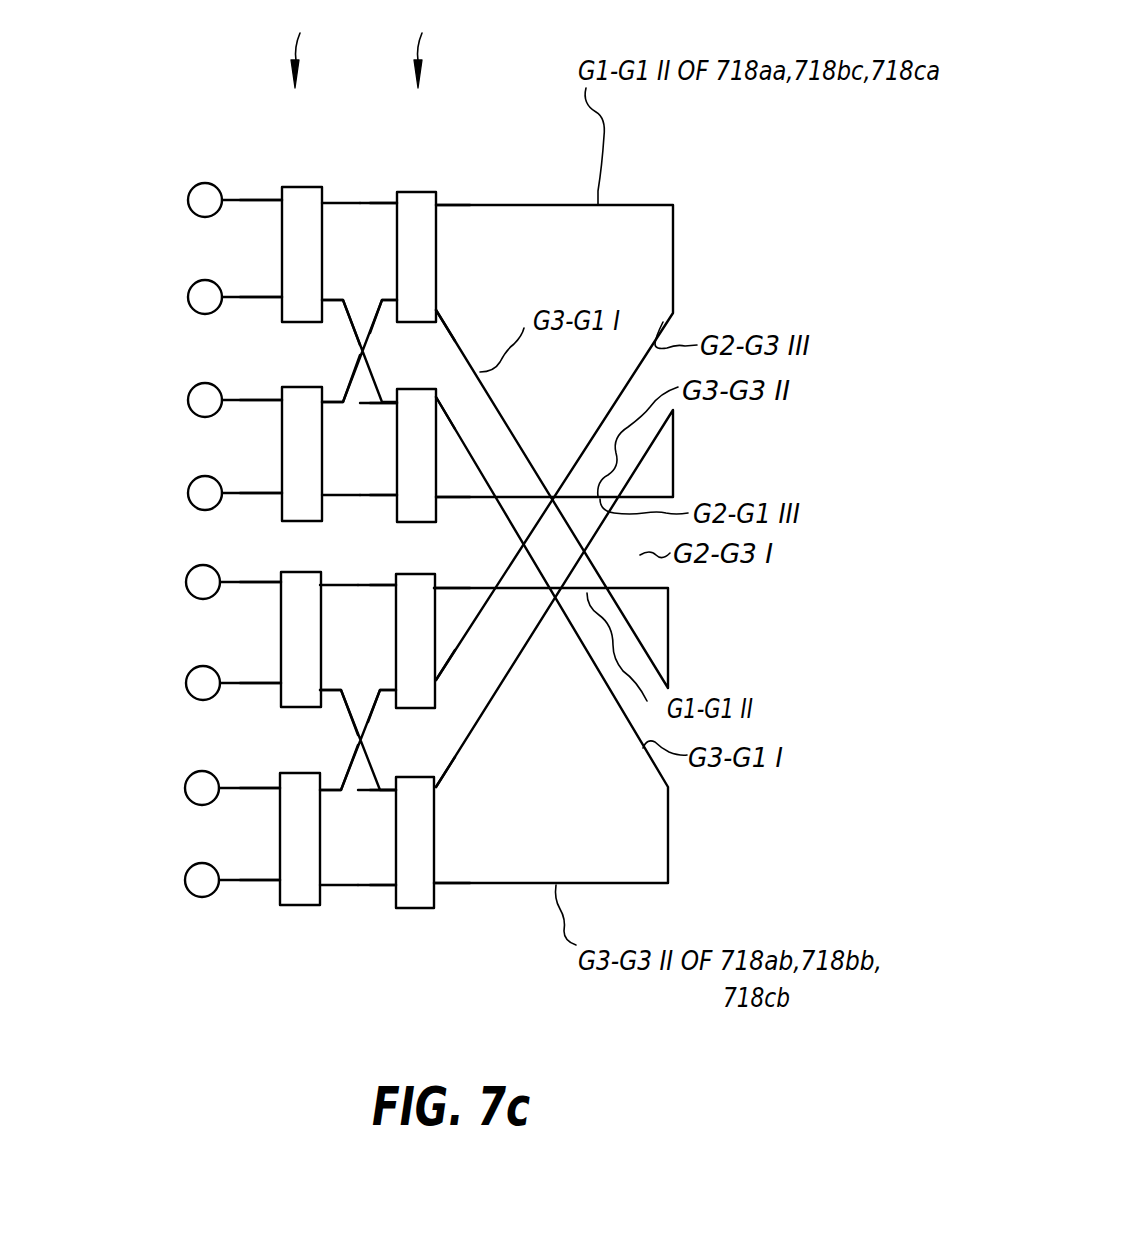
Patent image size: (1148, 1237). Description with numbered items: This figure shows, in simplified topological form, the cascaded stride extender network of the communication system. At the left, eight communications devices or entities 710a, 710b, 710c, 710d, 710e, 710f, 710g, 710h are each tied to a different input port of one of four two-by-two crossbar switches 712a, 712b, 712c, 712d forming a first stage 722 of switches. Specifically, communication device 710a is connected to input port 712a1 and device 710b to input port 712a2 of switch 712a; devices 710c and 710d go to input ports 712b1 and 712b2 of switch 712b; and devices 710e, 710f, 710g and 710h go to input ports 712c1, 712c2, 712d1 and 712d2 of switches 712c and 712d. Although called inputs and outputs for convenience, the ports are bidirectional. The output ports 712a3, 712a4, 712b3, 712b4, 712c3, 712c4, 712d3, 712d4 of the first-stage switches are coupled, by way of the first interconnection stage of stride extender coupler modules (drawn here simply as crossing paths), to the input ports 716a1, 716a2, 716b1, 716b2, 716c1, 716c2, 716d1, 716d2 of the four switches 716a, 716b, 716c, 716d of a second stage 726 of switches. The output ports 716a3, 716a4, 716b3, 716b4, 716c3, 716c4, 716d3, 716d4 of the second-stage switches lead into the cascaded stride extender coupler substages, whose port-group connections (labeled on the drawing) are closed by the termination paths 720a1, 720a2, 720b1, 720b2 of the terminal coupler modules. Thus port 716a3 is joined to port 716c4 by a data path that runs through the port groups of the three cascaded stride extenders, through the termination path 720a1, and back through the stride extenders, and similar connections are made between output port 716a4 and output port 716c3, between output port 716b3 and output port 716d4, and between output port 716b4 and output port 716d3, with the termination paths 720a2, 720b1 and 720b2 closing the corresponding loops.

The communication device 710a is at (189, 194).
The communication device 710b is at (188, 297).
The communication device 710c is at (188, 397).
The communication device 710d is at (188, 494).
The communication device 710e is at (186, 582).
The communication device 710f is at (186, 683).
The communication device 710g is at (185, 787).
The communication device 710h is at (185, 880).
The crossbar switch 712a is at (303, 187).
The input port 712a1 is at (282, 208).
The input port 712a2 is at (282, 292).
The output port 712a3 is at (322, 210).
The output port 712a4 is at (322, 304).
The crossbar switch 712b is at (282, 447).
The input port 712b1 is at (242, 400).
The input port 712b2 is at (282, 487).
The output port 712b3 is at (322, 400).
The output port 712b4 is at (322, 503).
The crossbar switch 712c is at (281, 640).
The input port 712c1 is at (281, 590).
The input port 712c2 is at (281, 689).
The output port 712c3 is at (322, 583).
The output port 712c4 is at (320, 700).
The crossbar switch 712d is at (300, 905).
The input port 712d1 is at (280, 795).
The input port 712d2 is at (280, 885).
The output port 712d3 is at (352, 890).
The output port 712d4 is at (325, 905).
The switch 716a is at (430, 192).
The input port 716a1 is at (398, 191).
The input port 716a2 is at (396, 312).
The output port 716a3 is at (440, 203).
The output port 716a4 is at (436, 313).
The switch 716b is at (460, 440).
The input port 716b1 is at (397, 404).
The input port 716b2 is at (397, 493).
The output port 716b3 is at (445, 378).
The output port 716b4 is at (460, 545).
The switch 716c is at (434, 578).
The input port 716c1 is at (395, 588).
The input port 716c2 is at (396, 706).
The output port 716c3 is at (436, 590).
The output port 716c4 is at (435, 683).
The switch 716d is at (439, 856).
The input port 716d1 is at (396, 803).
The input port 716d2 is at (397, 893).
The output port 716d3 is at (436, 790).
The output port 716d4 is at (436, 882).
The termination path 720a1 is at (673, 243).
The termination path 720a2 is at (673, 457).
The termination path 720b1 is at (668, 623).
The termination path 720b2 is at (668, 830).
The first stage of switches 722 is at (297, 45).
The second stage of switches 726 is at (429, 45).